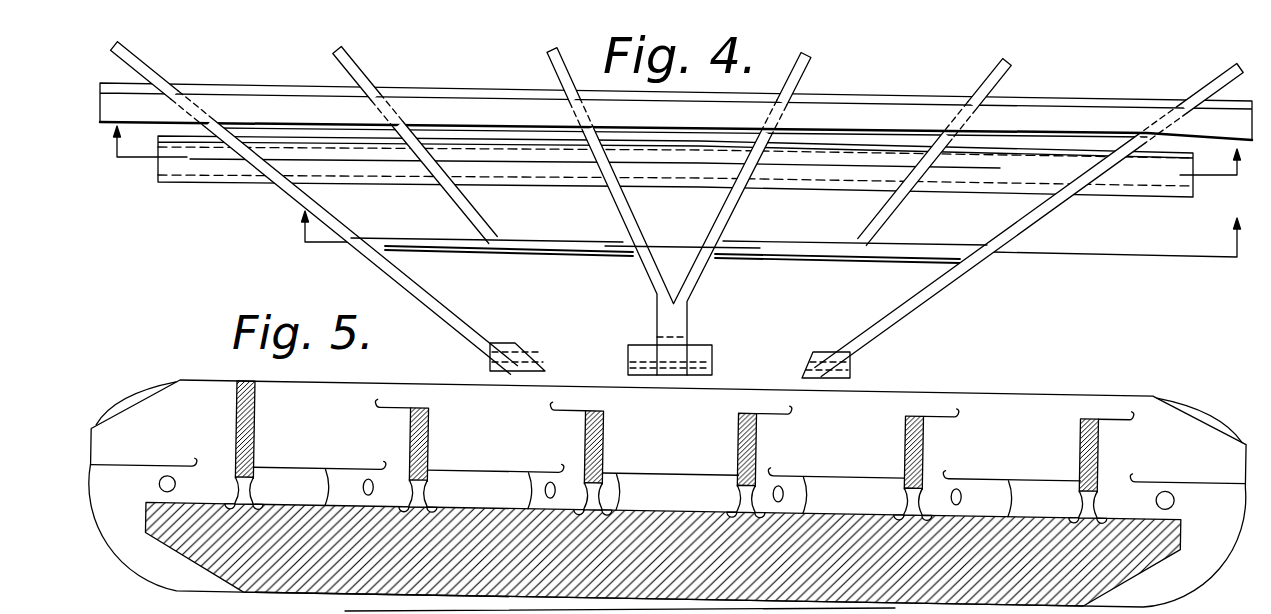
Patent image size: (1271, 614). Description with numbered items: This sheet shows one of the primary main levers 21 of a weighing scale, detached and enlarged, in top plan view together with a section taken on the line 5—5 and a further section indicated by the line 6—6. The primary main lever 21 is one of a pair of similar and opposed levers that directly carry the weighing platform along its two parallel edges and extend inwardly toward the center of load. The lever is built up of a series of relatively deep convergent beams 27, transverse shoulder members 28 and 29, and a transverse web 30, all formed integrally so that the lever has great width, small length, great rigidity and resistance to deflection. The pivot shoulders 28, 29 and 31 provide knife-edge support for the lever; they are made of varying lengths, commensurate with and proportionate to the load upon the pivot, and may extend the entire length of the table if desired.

In FIG. 4, the section line 5- 5 is at (675, 164).
In FIG. 4, the section line 6- 6 is at (769, 249).
In FIG. 4, the primary main lever 21 is at (669, 223).
In FIG. 4, the convergent beams 27 is at (135, 69).
In FIG. 5, the convergent beams 27 is at (250, 448).
In FIG. 4, the transverse shoulder member 28 is at (450, 81).
In FIG. 5, the transverse shoulder member 28 is at (138, 423).
In FIG. 4, the transverse shoulder member 29 is at (371, 168).
In FIG. 5, the transverse shoulder member 29 is at (167, 518).
In FIG. 4, the transverse web 30 is at (578, 250).
In FIG. 4, the pivot shoulder 31 is at (511, 347).